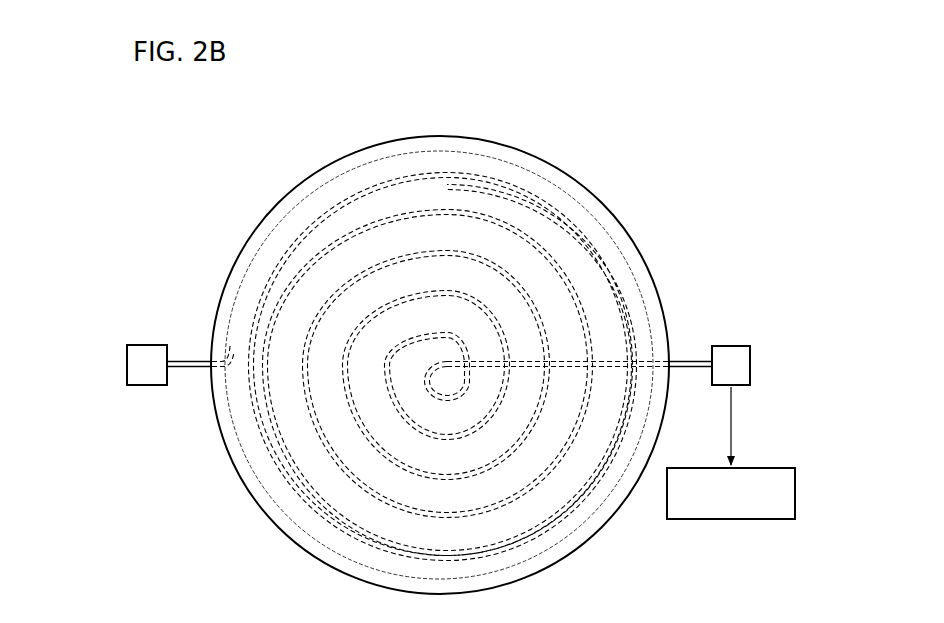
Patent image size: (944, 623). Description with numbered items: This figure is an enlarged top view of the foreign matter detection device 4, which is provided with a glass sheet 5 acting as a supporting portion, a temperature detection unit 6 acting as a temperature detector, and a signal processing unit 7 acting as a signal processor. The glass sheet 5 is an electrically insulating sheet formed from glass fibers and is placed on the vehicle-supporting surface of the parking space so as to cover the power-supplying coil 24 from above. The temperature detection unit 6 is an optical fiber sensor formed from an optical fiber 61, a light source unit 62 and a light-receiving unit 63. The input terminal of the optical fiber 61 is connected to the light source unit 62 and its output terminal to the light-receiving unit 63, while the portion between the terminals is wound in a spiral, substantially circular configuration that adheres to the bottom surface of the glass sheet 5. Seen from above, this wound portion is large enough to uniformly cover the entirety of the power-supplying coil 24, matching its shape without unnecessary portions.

The foreign matter detection device 4 is at (699, 280).
The glass sheet 5 is at (462, 147).
The temperature detection unit 6 is at (191, 335).
The signal processing unit 7 is at (795, 500).
The power-supplying coil 24 is at (255, 400).
The optical fiber 61 is at (305, 265).
The light source unit 62 is at (150, 366).
The light-receiving unit 63 is at (740, 368).